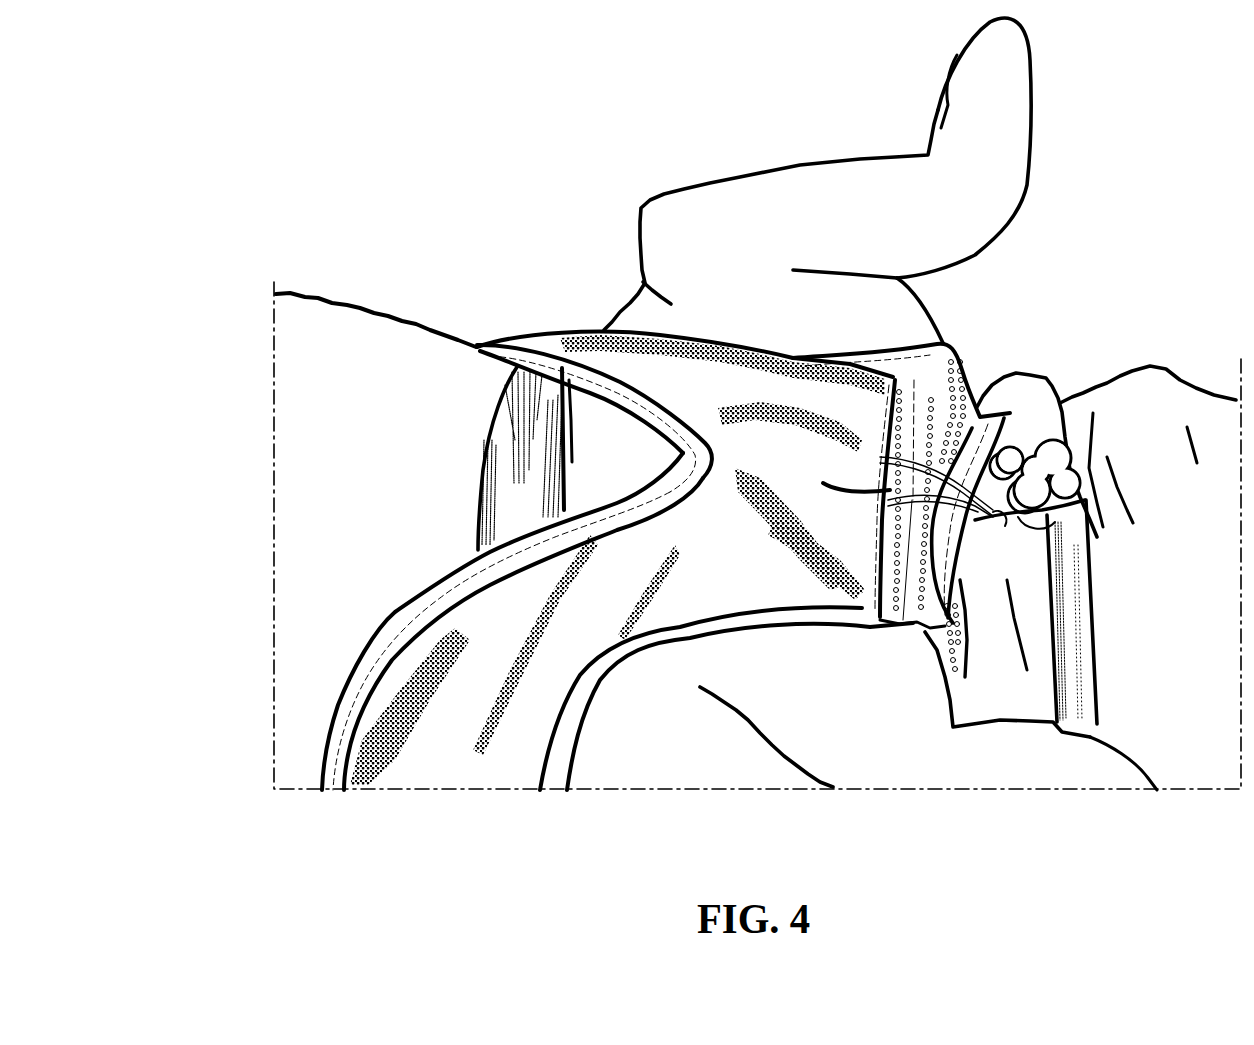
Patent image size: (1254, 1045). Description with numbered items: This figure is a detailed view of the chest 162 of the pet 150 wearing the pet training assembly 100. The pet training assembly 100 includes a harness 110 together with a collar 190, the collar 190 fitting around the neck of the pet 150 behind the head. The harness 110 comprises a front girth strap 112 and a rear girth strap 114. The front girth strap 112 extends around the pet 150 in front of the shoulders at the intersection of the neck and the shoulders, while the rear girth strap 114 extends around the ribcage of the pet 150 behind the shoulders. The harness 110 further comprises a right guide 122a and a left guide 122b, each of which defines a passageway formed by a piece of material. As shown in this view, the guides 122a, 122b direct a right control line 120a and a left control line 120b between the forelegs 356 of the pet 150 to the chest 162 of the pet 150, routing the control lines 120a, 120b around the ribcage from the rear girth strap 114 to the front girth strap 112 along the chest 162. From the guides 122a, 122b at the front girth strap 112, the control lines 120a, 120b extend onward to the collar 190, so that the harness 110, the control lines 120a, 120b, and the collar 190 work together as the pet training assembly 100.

The pet training assembly 100 is at (528, 250).
The harness 110 is at (512, 760).
The front girth strap 112 is at (957, 395).
The rear girth strap 114 is at (507, 453).
The right control line 120a is at (918, 457).
The left control line 120b is at (908, 587).
The right guide 122a is at (647, 360).
The left guide 122b is at (553, 657).
The pet 150 is at (305, 397).
The chest 162 is at (738, 678).
The collar 190 is at (1087, 582).
The forelegs 356 is at (978, 87).